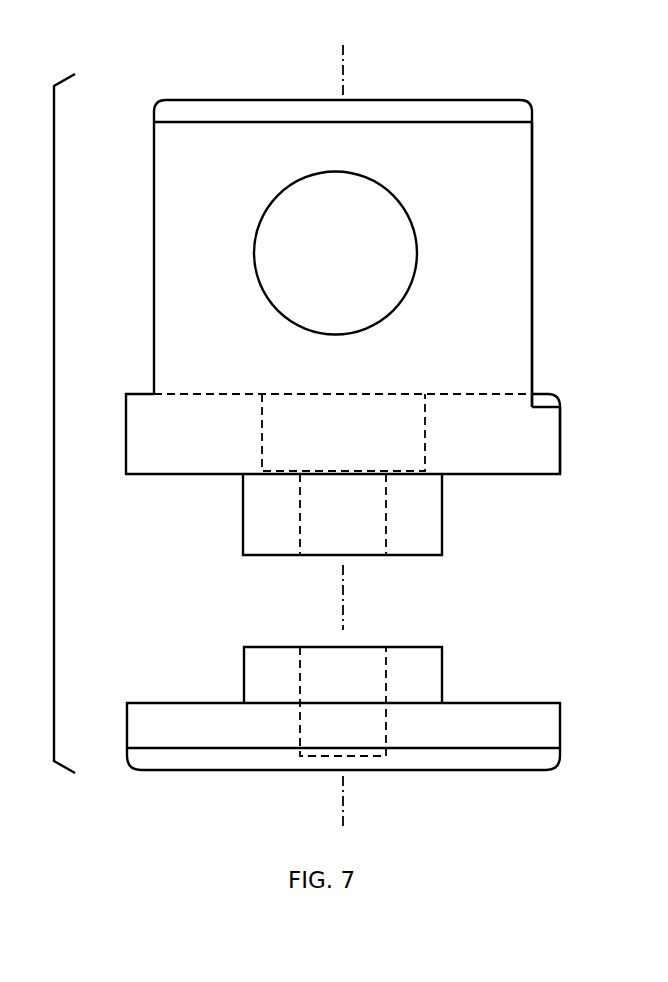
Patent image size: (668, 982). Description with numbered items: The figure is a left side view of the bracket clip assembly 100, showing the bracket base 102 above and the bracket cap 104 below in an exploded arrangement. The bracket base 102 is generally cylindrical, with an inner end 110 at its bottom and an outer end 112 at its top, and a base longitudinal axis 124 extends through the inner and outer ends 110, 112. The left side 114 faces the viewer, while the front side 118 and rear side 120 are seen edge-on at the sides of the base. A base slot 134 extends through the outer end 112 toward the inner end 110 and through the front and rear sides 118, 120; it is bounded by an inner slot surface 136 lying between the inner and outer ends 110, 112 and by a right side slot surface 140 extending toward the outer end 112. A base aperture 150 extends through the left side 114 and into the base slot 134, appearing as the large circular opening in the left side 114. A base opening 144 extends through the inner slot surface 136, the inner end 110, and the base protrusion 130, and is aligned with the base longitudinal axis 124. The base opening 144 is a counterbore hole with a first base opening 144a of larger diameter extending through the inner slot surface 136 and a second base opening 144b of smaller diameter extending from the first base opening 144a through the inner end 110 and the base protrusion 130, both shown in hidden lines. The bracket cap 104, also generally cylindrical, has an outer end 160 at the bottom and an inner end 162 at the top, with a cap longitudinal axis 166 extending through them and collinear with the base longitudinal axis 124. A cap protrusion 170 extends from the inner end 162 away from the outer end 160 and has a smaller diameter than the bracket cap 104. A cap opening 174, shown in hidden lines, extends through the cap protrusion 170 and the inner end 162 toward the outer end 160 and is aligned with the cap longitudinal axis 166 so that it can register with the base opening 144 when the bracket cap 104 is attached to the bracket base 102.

The bracket clip assembly 100 is at (560, 87).
The bracket base 102 is at (490, 230).
The bracket cap 104 is at (470, 730).
The inner end 110 is at (508, 474).
The outer end 112 is at (290, 100).
The left side 114 is at (356, 150).
The front side 118 is at (560, 430).
The rear side 120 is at (126, 437).
The base longitudinal axis 124 is at (342, 52).
The base protrusion 130 is at (243, 530).
The base slot 134 is at (535, 292).
The inner slot surface 136 is at (538, 394).
The right side slot surface 140 is at (365, 226).
The base opening 144 is at (333, 392).
The first base opening 144a is at (258, 426).
The second base opening 144b is at (388, 513).
The base aperture 150 is at (254, 250).
The outer end 160 is at (265, 770).
The inner end 162 is at (507, 703).
The cap longitudinal axis 166 is at (343, 790).
The cap protrusion 170 is at (244, 675).
The cap opening 174 is at (388, 675).